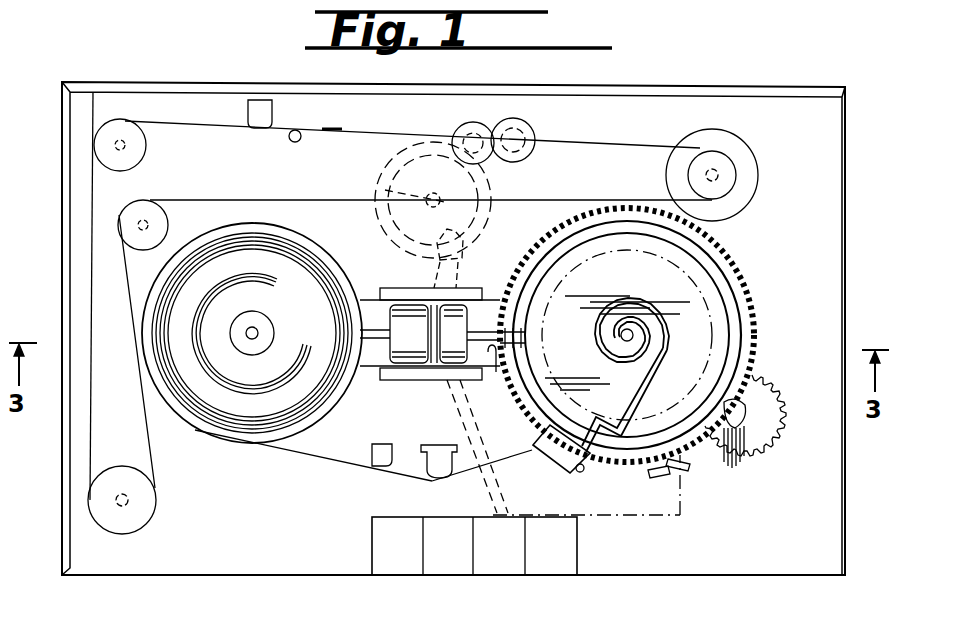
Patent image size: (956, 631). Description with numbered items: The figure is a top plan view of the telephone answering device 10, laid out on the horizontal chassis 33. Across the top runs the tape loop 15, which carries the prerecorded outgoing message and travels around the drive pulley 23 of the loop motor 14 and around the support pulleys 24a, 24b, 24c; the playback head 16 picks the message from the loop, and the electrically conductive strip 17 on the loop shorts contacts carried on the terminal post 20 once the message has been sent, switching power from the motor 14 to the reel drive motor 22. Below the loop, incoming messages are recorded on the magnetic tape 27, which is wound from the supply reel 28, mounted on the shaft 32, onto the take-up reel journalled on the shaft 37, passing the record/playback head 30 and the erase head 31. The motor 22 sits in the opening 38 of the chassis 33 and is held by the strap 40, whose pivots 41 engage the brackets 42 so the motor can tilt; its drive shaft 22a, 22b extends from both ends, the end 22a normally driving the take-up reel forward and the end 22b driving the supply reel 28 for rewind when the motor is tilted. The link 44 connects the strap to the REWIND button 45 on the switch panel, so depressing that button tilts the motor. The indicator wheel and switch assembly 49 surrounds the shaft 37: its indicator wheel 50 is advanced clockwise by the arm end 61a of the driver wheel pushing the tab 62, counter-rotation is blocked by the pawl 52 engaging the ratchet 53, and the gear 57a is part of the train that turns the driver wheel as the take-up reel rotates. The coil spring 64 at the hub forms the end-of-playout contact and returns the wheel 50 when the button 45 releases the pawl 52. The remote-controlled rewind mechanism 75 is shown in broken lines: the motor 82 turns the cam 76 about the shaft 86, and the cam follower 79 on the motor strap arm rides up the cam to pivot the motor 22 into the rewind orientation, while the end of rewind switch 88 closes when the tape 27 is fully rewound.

The telephone answering device 10 is at (790, 86).
The motor 14 is at (756, 160).
The tape loop 15 is at (610, 146).
The playback head 16 is at (258, 99).
The electrically conductive strip 17 is at (332, 126).
The terminal post 20 is at (294, 143).
The incoming message tape reel drive motor 22 is at (456, 325).
The drive shaft 22a is at (530, 335).
The drive shaft 22b is at (330, 372).
The drive pulley 23 is at (736, 176).
The support pulley 24a is at (145, 502).
The support pulley 24b is at (119, 128).
The support pulley 24c is at (147, 206).
The magnetic tape 27 is at (303, 452).
The supply reel 28 is at (205, 437).
The record/playback head 30 is at (438, 447).
The erase head 31 is at (380, 457).
The shaft 32 is at (252, 330).
The chassis 33 is at (286, 537).
The shaft 37 is at (634, 336).
The opening 38 is at (494, 378).
The strap 40 is at (427, 347).
The pivots 41 is at (420, 296).
The brackets 42 is at (383, 290).
The link 44 is at (494, 488).
The REWIND button 45 is at (492, 570).
The indicator wheel and switch assembly 49 is at (750, 324).
The indicator wheel 50 is at (688, 393).
The pawl 52 is at (690, 470).
The ratchet 53 is at (756, 332).
The gear 57a is at (758, 456).
The arm end 61a is at (588, 478).
The tab 62 is at (536, 446).
The coil spring 64 is at (630, 300).
The remote-controlled rewind mechanism 75 is at (423, 180).
The cam 76 is at (483, 197).
The cam follower 79 is at (470, 242).
The motor 82 is at (528, 118).
The shaft 86 is at (384, 186).
The end of rewind switch 88 is at (660, 480).